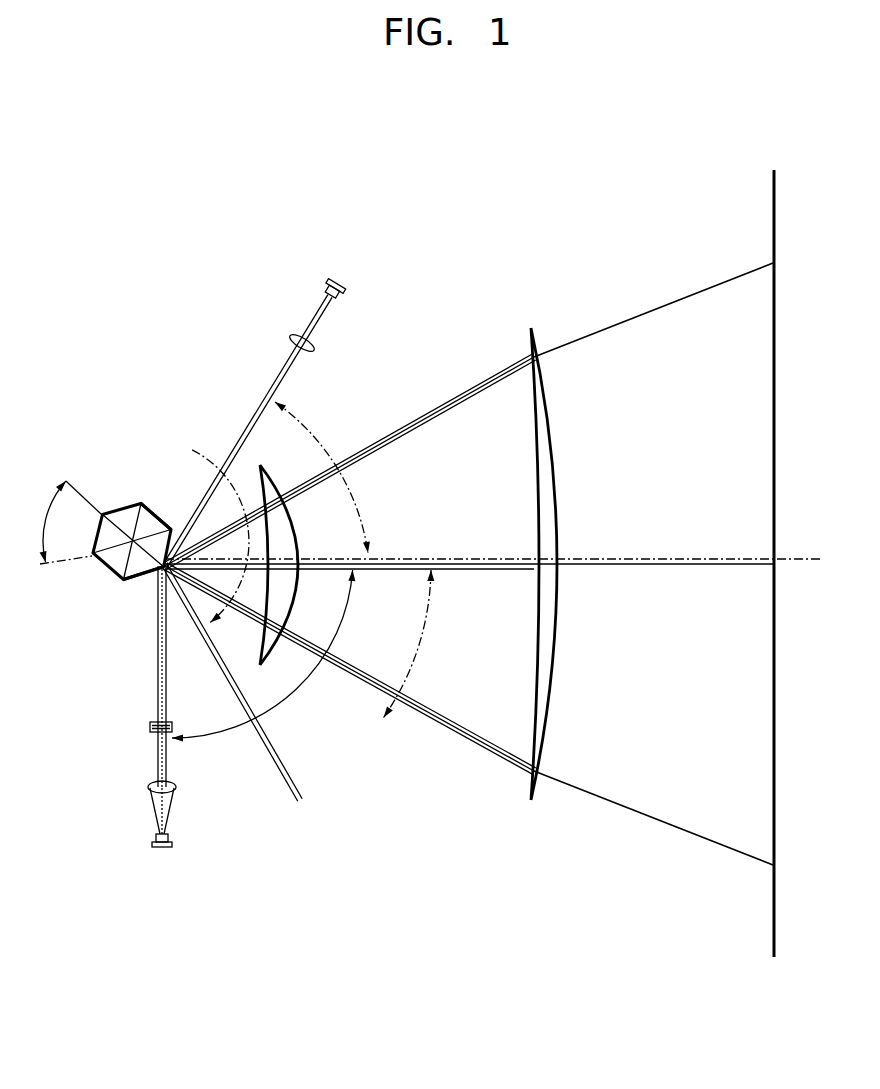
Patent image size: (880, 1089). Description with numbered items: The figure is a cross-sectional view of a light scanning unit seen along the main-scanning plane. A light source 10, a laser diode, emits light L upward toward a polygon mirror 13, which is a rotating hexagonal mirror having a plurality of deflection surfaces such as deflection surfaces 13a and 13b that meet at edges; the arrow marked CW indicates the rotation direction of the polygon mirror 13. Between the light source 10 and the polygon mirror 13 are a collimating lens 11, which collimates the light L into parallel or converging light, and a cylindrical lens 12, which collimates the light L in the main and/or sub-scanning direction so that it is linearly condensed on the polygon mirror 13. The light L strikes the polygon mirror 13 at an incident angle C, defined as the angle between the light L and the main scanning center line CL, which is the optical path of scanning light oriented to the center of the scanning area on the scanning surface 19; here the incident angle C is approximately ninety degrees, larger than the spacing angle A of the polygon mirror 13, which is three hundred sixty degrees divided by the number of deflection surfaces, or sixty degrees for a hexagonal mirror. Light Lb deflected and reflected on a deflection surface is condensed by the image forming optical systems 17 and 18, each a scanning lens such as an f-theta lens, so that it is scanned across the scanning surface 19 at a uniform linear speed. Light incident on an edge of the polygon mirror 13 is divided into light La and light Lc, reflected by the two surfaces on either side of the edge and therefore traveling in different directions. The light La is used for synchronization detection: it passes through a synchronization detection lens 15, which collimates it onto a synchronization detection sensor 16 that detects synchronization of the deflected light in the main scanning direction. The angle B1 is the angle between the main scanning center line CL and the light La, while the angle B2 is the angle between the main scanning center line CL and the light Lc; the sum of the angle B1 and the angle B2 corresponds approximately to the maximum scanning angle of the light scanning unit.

The light source 10 is at (152, 841).
The collimating lens 11 is at (150, 787).
The cylindrical lens 12 is at (150, 727).
The polygon mirror 13 is at (108, 565).
The deflection surface 13a is at (138, 583).
The deflection surface 13b is at (177, 522).
The synchronization detection lens 15 is at (295, 337).
The synchronization detection sensor 16 is at (326, 283).
The image forming optical system 17 is at (292, 520).
The image forming optical system 18 is at (558, 497).
The scanning surface 19 is at (770, 908).
The light L is at (157, 672).
The light for synchronization detection La is at (252, 415).
The light deflected on a deflection surface Lb is at (423, 409).
The light divided at the edge Lc is at (273, 758).
The main scanning center line CL is at (653, 564).
The clockwise rotation direction CW is at (217, 462).
The spacing angle A is at (63, 521).
The angle of the light La B1 is at (328, 477).
The angle of the light Lc B2 is at (414, 644).
The incident angle C is at (263, 656).